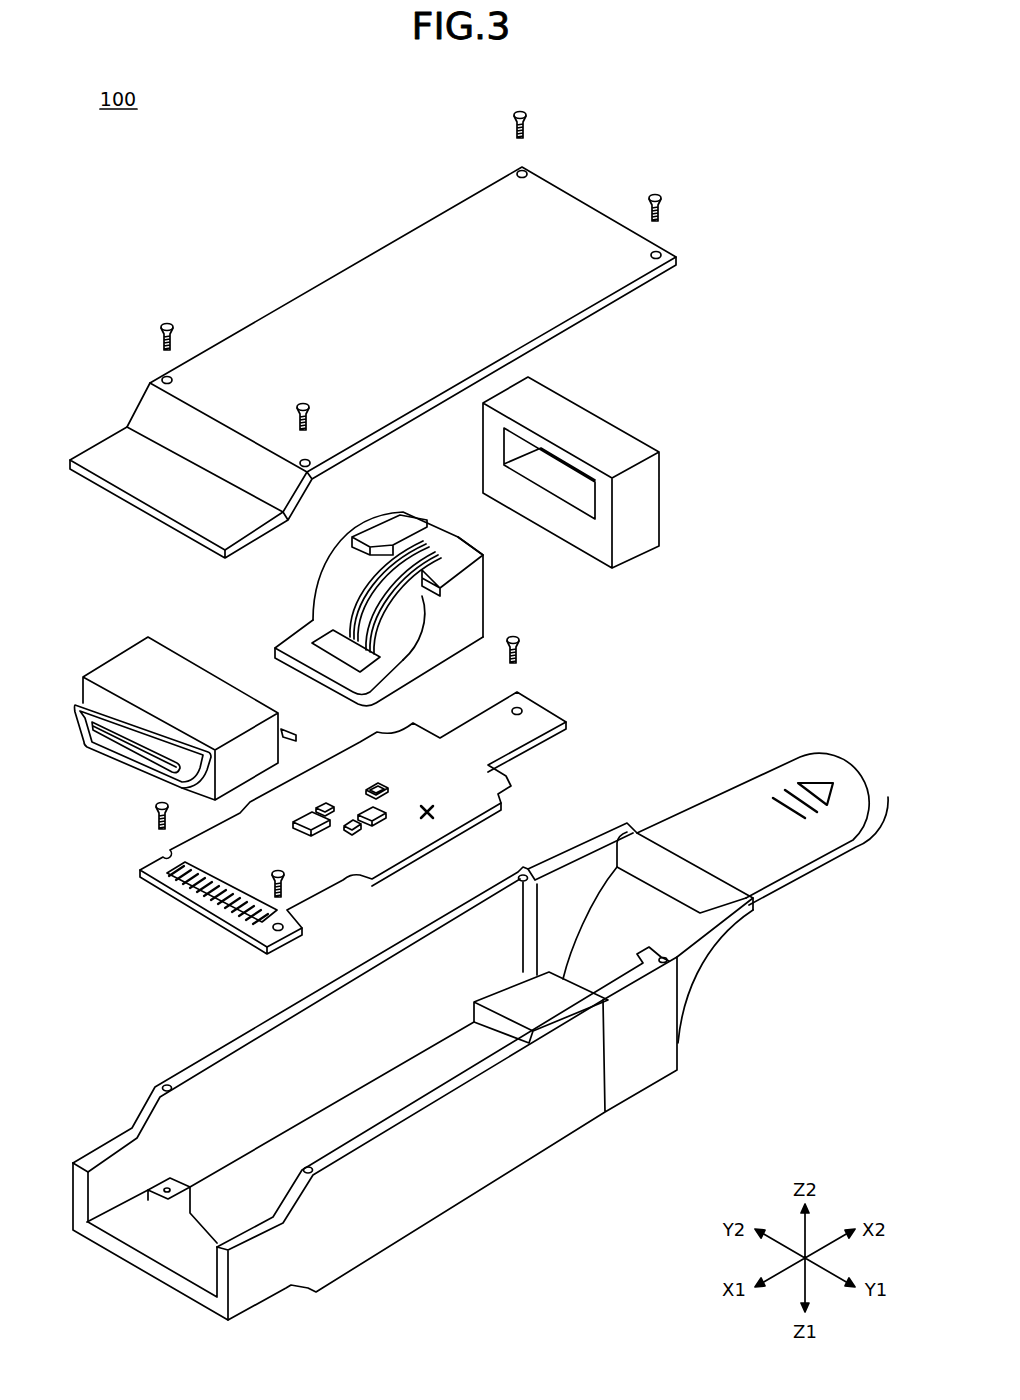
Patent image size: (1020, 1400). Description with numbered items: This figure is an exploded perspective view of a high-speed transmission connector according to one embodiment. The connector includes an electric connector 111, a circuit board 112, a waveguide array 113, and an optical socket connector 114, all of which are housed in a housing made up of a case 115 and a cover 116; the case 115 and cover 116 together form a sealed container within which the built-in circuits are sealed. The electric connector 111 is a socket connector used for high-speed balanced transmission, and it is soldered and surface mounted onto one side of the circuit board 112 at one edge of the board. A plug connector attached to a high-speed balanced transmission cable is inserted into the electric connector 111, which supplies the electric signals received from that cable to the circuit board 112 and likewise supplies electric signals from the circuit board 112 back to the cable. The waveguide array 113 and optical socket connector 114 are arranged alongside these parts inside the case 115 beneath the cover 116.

The electric connector 111 is at (118, 665).
The circuit board 112 is at (199, 905).
The waveguide array 113 is at (472, 604).
The optical socket connector 114 is at (652, 498).
The case 115 is at (456, 1186).
The cover 116 is at (372, 272).